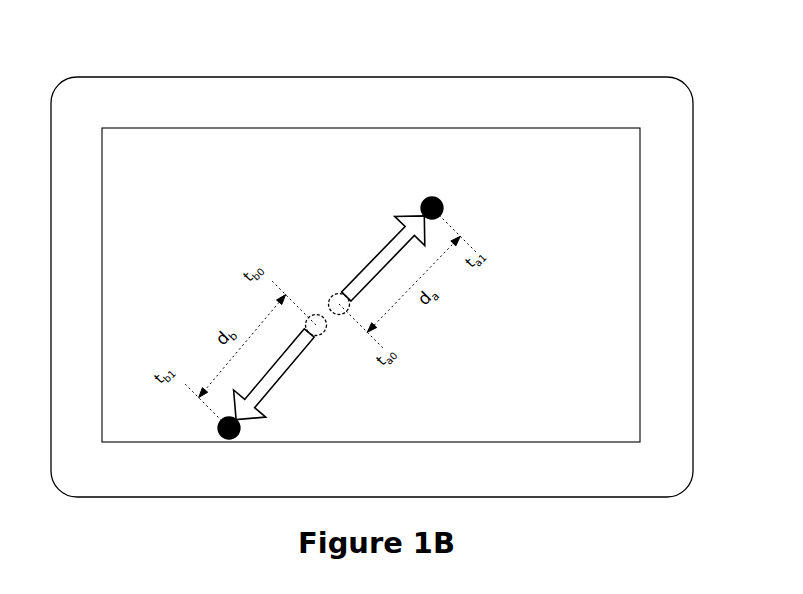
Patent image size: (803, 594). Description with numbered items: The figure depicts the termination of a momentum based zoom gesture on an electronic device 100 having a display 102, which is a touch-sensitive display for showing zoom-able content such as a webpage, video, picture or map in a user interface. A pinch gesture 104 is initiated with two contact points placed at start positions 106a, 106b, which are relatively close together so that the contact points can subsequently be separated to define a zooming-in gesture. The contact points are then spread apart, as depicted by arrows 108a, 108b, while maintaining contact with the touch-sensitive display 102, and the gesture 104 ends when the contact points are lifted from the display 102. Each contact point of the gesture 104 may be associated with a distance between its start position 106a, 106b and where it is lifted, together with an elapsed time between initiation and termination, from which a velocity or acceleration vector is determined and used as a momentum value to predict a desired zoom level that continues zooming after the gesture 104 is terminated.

The electronic device 100 is at (351, 76).
The display 102 is at (373, 154).
The pinch gesture 104 is at (256, 221).
The start position 106a is at (336, 293).
The start position 106b is at (317, 336).
The arrow 108a is at (443, 205).
The arrow 108b is at (223, 439).